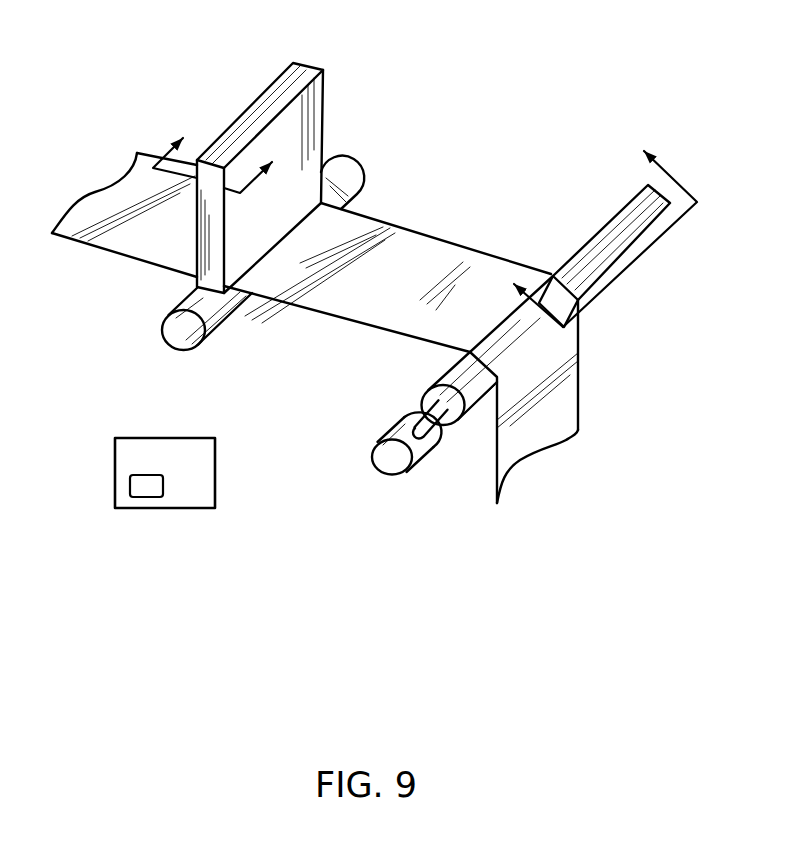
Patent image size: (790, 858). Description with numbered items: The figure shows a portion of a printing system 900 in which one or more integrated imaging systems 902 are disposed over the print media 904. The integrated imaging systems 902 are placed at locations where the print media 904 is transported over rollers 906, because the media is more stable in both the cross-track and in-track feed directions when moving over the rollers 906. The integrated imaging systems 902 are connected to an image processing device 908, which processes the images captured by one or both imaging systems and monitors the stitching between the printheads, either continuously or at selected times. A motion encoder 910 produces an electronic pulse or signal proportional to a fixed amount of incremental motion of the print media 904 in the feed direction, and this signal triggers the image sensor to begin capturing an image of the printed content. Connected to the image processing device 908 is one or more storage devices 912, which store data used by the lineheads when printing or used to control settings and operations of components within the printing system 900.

The printing system 900 is at (484, 104).
The integrated imaging system 902 is at (300, 62).
The print media 904 is at (433, 237).
The roller 906 is at (166, 338).
The image processing device 908 is at (158, 438).
The motion encoder 910 is at (372, 444).
The storage device 912 is at (130, 481).